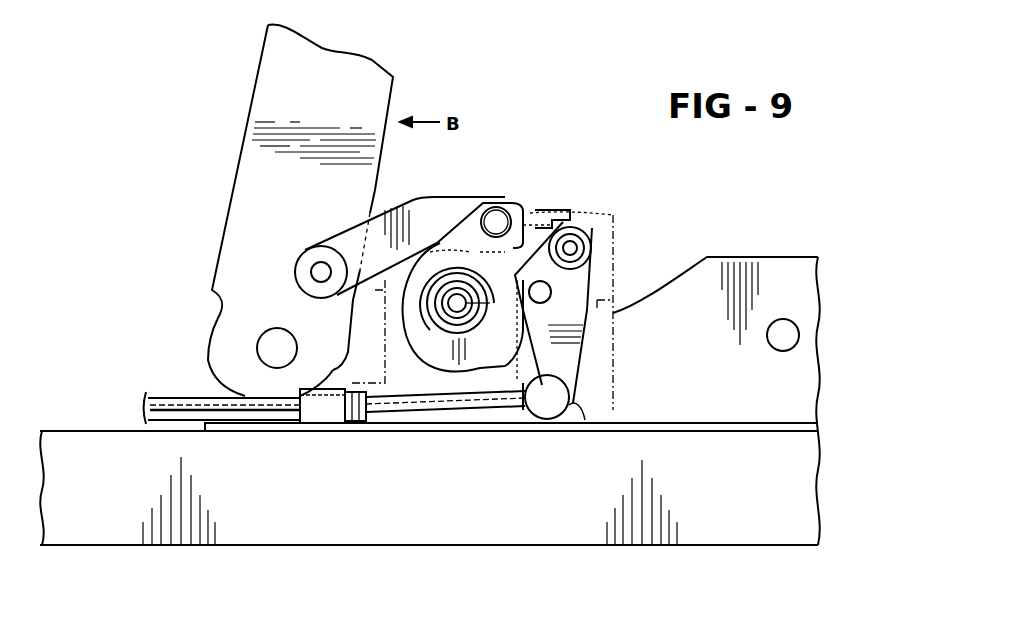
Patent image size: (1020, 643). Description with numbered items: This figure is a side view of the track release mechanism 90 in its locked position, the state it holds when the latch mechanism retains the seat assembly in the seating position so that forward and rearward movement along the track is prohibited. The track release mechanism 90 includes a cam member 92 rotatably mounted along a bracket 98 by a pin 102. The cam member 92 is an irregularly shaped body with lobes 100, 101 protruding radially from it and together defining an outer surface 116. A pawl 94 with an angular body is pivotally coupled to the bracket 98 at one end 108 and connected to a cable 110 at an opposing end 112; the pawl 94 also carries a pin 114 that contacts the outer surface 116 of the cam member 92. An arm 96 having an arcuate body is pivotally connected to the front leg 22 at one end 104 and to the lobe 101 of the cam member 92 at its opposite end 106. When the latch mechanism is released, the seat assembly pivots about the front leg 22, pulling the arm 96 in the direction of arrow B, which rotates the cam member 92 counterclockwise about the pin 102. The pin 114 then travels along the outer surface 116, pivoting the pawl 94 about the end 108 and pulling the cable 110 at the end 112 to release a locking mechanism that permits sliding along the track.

The front leg 22 is at (250, 203).
The track release mechanism 90 is at (506, 136).
The cam member 92 is at (456, 306).
The pawl 94 is at (590, 233).
The arm 96 is at (440, 200).
The bracket 98 is at (615, 403).
The lobe 100 is at (503, 372).
The lobe 101 is at (505, 215).
The pin 102 is at (420, 360).
The end of arm 104 is at (296, 262).
The opposite end of arm 106 is at (512, 195).
The end of pawl 108 is at (590, 222).
The cable 110 is at (487, 400).
The opposing end of pawl 112 is at (578, 400).
The pin 114 is at (552, 293).
The outer surface 116 is at (585, 345).